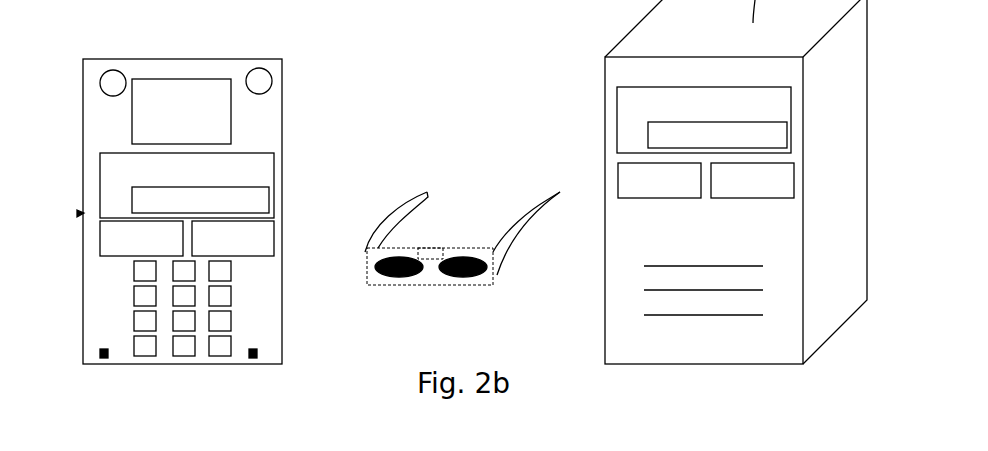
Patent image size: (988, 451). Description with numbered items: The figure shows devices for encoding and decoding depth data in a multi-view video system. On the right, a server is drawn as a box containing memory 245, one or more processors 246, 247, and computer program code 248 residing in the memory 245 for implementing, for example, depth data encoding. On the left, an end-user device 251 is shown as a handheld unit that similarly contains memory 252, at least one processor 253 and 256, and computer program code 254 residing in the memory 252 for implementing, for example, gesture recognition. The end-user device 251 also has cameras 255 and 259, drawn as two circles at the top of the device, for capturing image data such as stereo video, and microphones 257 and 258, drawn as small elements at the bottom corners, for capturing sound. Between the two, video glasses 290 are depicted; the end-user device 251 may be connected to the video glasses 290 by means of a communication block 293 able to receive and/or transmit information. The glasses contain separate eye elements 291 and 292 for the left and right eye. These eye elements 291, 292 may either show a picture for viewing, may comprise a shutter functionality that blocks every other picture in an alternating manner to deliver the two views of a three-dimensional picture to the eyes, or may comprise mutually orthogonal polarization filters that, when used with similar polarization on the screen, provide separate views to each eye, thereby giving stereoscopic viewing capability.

The end-user device 251 is at (285, 92).
The memory 252 is at (100, 153).
The processor 253 is at (98, 241).
The computer program code 254 is at (272, 203).
The camera 255 is at (113, 62).
The processor 256 is at (274, 245).
The microphone 257 is at (254, 348).
The microphone 258 is at (101, 348).
The camera 259 is at (258, 62).
The video glasses 290 is at (405, 187).
The eye element 291 is at (392, 277).
The eye element 292 is at (460, 278).
The communication block 293 is at (430, 246).
The memory 245 is at (613, 143).
The processor 246 is at (613, 187).
The processor 247 is at (798, 182).
The computer program code 248 is at (790, 132).